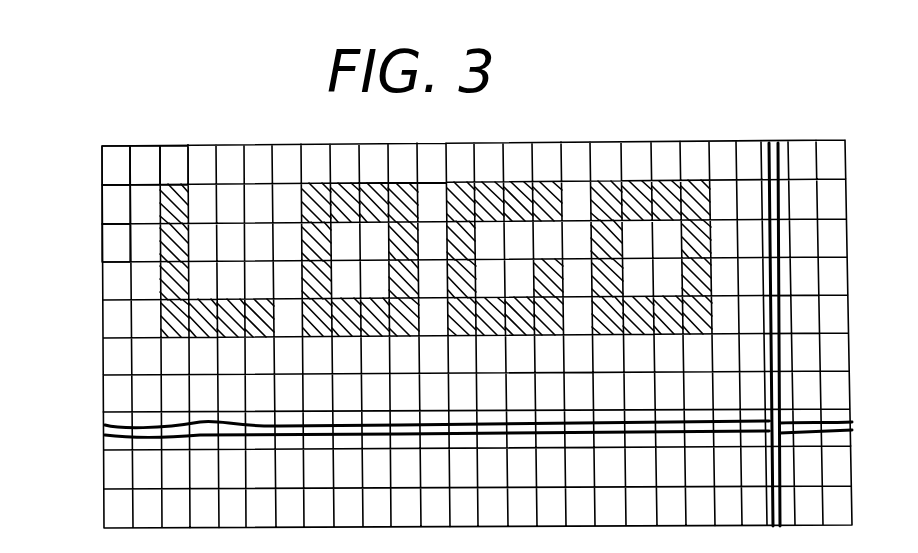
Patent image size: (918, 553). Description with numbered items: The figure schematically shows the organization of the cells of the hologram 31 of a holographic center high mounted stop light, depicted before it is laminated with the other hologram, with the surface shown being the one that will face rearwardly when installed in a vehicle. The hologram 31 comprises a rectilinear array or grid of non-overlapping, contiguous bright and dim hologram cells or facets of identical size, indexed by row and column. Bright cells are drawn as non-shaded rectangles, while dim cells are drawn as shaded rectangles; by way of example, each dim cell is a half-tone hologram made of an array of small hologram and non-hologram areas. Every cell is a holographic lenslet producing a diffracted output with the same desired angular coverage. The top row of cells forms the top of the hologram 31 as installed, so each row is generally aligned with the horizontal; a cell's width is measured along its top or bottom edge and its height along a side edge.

The hologram 31 is at (757, 120).